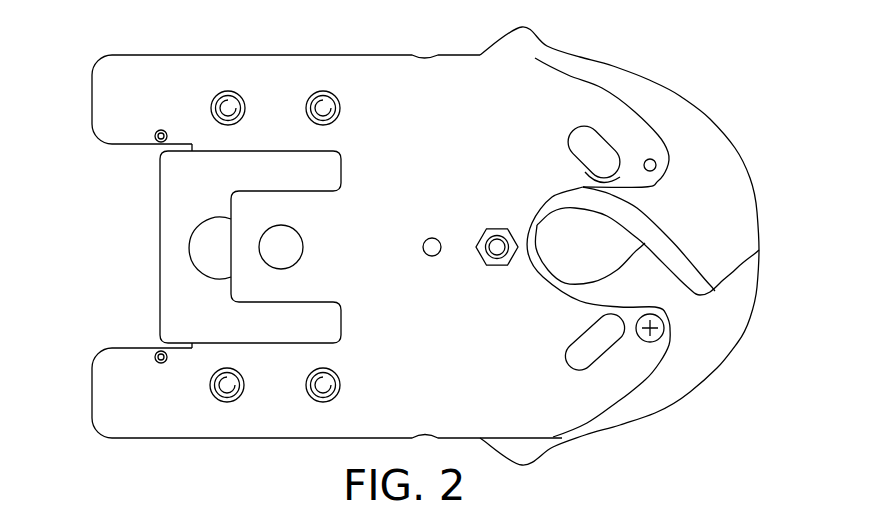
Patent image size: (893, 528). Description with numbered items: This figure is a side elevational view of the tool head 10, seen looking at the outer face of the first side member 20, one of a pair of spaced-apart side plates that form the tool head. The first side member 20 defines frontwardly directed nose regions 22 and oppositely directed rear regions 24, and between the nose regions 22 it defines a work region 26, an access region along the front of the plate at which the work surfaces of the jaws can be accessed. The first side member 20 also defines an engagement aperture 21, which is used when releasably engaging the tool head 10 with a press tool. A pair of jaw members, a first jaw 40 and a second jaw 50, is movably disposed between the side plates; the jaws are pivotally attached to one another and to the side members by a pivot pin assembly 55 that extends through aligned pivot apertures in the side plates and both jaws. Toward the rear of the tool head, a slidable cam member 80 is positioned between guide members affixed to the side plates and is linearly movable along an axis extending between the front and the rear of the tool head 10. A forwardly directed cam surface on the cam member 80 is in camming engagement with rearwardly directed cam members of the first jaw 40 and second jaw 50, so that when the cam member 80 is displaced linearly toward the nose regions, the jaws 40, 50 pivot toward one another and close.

The tool head 10 is at (735, 55).
The first side member 20 is at (520, 95).
The engagement aperture 21 is at (275, 254).
The nose regions 22 is at (677, 160).
The rear regions 24 is at (93, 92).
The work region 26 is at (630, 292).
The first jaw 40 is at (738, 208).
The second jaw 50 is at (660, 383).
The pivot pin assembly 55 is at (498, 225).
The slidable cam member 80 is at (177, 175).